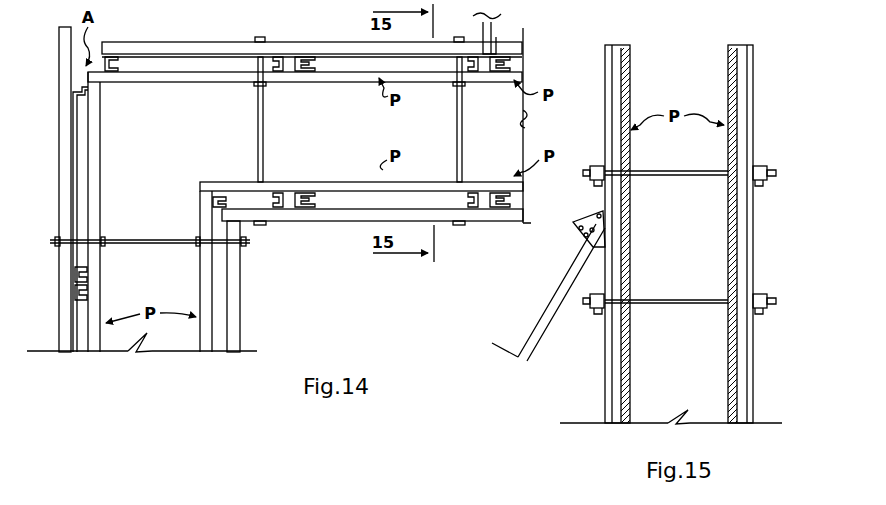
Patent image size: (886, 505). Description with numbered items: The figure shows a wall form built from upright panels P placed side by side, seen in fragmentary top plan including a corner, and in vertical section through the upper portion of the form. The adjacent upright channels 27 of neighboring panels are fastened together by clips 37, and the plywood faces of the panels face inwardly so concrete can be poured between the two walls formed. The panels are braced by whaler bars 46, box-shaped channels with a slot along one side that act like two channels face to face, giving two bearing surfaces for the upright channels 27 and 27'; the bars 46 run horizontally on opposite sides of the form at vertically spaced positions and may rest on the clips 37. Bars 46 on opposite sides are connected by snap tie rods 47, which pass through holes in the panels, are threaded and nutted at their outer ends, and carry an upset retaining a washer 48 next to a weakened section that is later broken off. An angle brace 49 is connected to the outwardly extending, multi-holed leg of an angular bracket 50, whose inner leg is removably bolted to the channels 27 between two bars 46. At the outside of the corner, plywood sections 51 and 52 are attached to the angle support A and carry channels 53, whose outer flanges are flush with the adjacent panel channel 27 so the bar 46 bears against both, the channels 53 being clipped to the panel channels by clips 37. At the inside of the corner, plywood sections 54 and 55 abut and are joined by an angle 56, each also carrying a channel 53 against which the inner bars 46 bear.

In FIG. 14, the channel 27 is at (319, 178).
In FIG. 15, the channel 27 is at (626, 222).
In FIG. 15, the upright channel 27' is at (745, 217).
In FIG. 15, the clip 37 is at (602, 185).
In FIG. 14, the bar 46 is at (200, 43).
In FIG. 15, the bar 46 is at (598, 166).
In FIG. 14, the rod 47 is at (264, 135).
In FIG. 15, the rod 47 is at (708, 174).
In FIG. 14, the washer 48 is at (256, 84).
In FIG. 14, the angle brace 49 is at (548, 304).
In FIG. 14, the angular bracket 50 is at (570, 235).
In FIG. 14, the plywood section 51 is at (147, 82).
In FIG. 14, the plywood section 52 is at (100, 175).
In FIG. 14, the channel 53 is at (273, 57).
In FIG. 14, the plywood section 54 is at (228, 183).
In FIG. 14, the plywood section 55 is at (200, 196).
In FIG. 14, the angle 56 is at (218, 197).